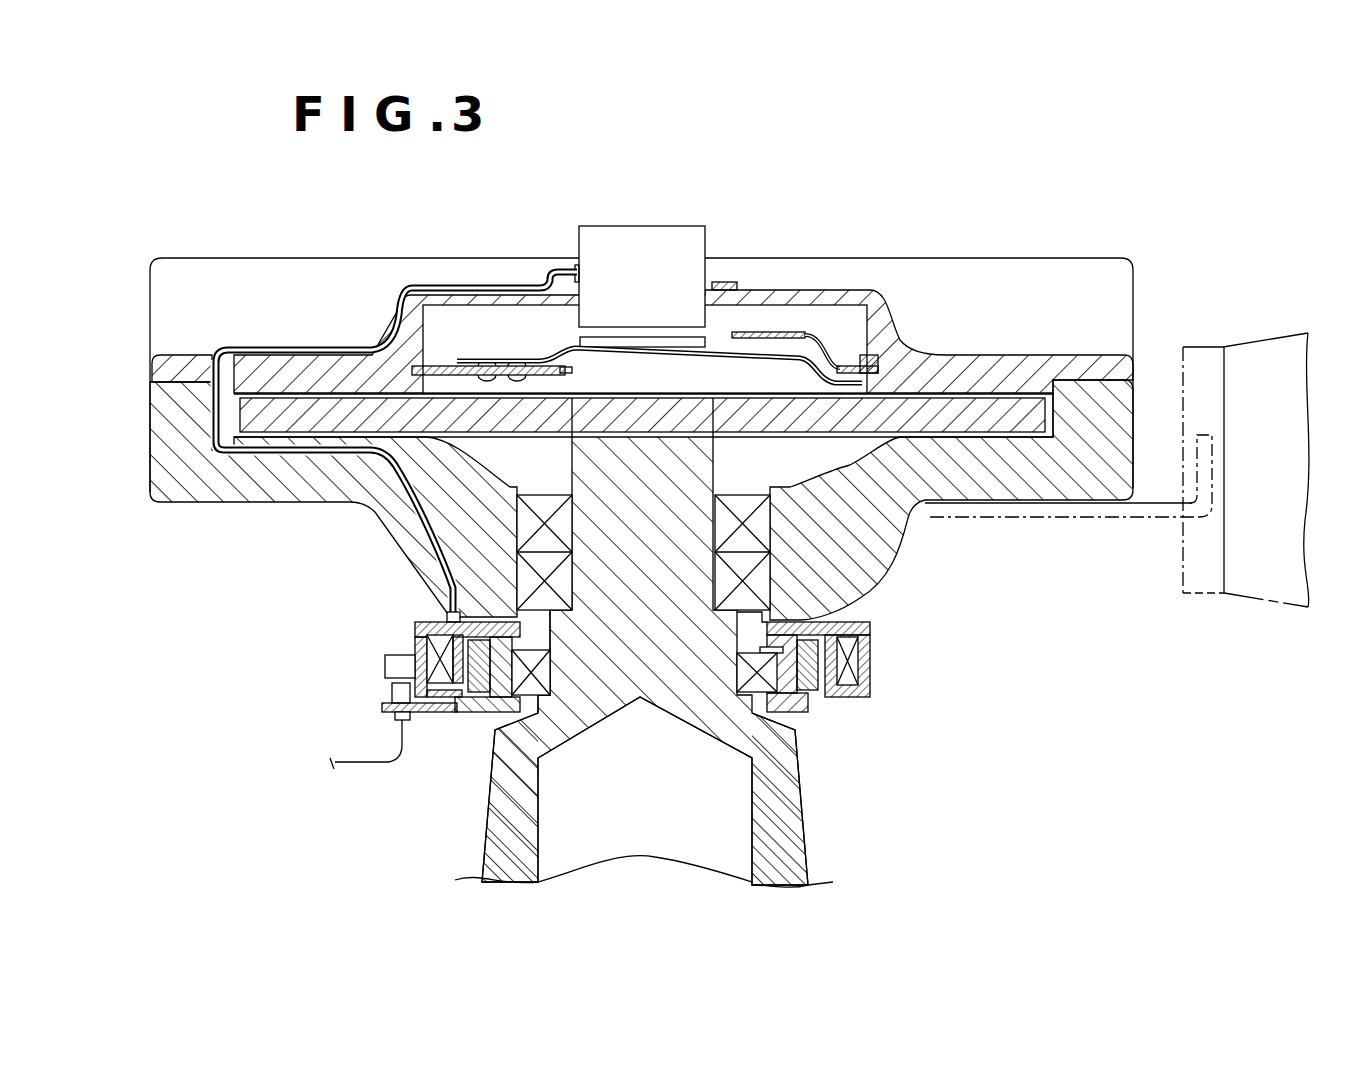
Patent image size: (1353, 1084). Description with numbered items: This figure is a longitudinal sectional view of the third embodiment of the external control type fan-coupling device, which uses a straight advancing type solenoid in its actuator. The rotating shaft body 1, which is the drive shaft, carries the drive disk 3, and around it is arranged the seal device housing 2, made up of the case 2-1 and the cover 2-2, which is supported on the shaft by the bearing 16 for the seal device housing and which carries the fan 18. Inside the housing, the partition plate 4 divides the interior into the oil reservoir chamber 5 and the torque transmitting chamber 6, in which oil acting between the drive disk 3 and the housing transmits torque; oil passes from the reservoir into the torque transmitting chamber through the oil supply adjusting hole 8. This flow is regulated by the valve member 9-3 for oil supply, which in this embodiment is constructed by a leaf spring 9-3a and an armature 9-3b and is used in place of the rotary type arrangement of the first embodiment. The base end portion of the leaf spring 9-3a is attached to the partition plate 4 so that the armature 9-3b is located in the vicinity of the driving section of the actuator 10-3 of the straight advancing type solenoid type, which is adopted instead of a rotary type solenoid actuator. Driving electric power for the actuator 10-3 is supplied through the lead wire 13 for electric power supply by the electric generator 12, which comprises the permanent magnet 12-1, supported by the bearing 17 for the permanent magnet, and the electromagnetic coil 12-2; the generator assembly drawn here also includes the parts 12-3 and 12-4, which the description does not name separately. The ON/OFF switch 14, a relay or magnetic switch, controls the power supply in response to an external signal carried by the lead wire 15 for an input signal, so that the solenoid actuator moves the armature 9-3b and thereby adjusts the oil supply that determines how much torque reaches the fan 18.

The rotating shaft body 1 is at (790, 832).
The seal device housing 2 is at (1050, 238).
The case 2-1 is at (247, 492).
The cover 2-2 is at (165, 372).
The drive disk 3 is at (947, 410).
The partition plate 4 is at (790, 335).
The oil reservoir chamber 5 is at (460, 327).
The torque transmitting chamber 6 is at (883, 563).
The oil supply adjusting hole 8 is at (850, 372).
The valve member for oil supply 9-3 is at (545, 335).
The leaf spring 9-3a is at (758, 345).
The armature 9-3b is at (681, 345).
The actuator of the straight advancing type solenoid type 10-3 is at (635, 248).
The electric generator 12 is at (422, 733).
The permanent magnet 12-1 is at (810, 690).
The electromagnetic coil 12-2 is at (877, 680).
The sensor base 12-3 is at (793, 713).
The sensor coil 12-4 is at (872, 647).
The lead wire for electric power supply 13 is at (392, 318).
The ON/OFF switch 14 is at (388, 667).
The lead wire for an input signal 15 is at (355, 767).
The bearing for the seal device housing 16 is at (530, 588).
The bearing for the permanent magnet 17 is at (565, 683).
The fan 18 is at (1262, 557).